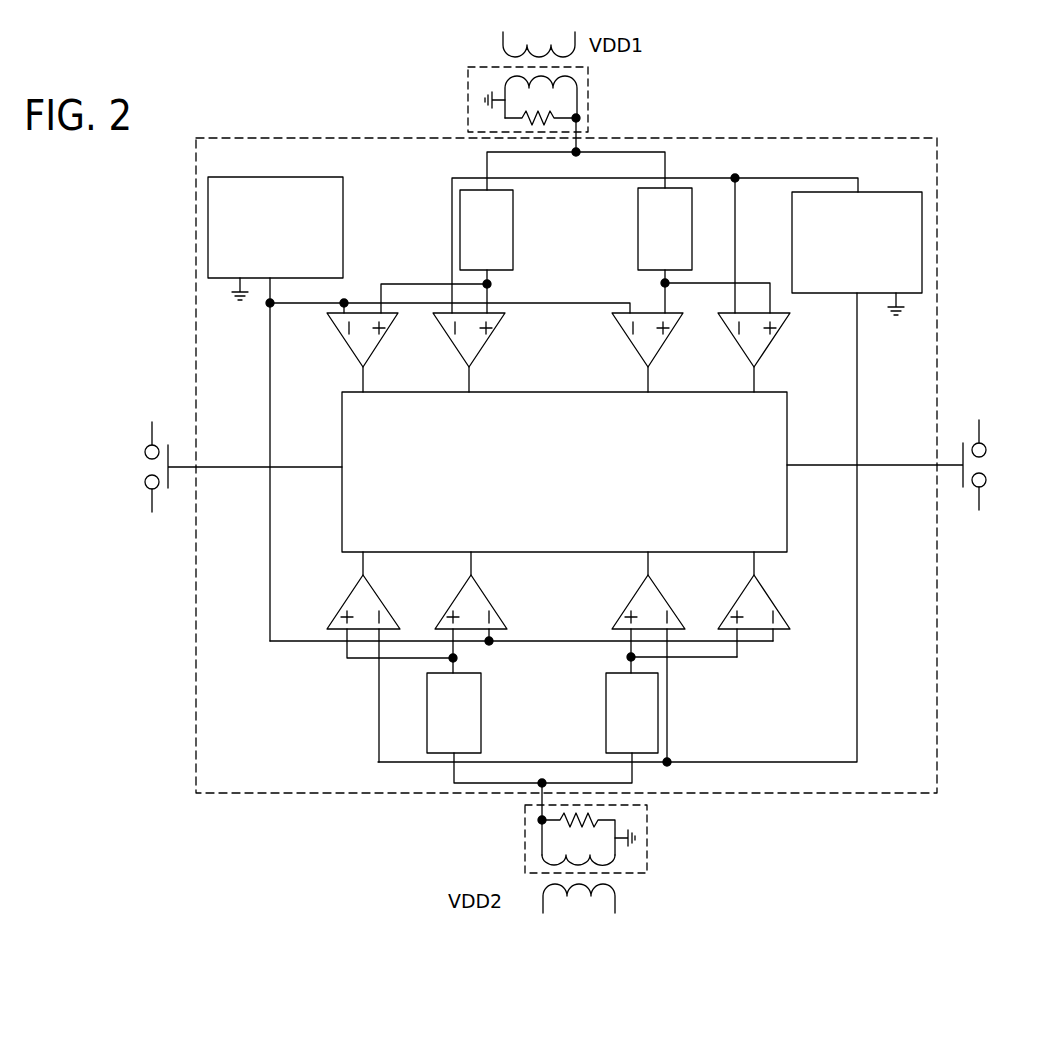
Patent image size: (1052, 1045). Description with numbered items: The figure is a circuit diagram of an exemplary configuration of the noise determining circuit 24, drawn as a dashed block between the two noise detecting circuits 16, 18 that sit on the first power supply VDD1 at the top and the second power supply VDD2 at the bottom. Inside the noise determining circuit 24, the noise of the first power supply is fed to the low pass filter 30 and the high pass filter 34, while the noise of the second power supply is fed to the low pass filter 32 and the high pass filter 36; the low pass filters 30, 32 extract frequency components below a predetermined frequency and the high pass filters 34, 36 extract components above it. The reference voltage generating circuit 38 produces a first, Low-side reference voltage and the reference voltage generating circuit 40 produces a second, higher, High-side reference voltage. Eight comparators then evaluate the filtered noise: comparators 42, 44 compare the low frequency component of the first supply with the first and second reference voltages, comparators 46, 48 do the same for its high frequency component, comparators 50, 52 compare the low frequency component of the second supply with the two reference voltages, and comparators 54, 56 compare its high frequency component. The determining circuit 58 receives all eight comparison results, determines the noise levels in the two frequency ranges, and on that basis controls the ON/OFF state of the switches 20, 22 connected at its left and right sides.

The noise detecting circuit 16 is at (590, 104).
The noise detecting circuit 18 is at (648, 852).
The switch 20 is at (145, 485).
The switch 22 is at (986, 481).
The noise determining circuit 24 is at (938, 712).
The low pass filter 30 is at (514, 232).
The low pass filter 32 is at (605, 725).
The high pass filter 34 is at (637, 242).
The high pass filter 36 is at (482, 704).
The reference voltage generating circuit 38 is at (344, 232).
The reference voltage generating circuit 40 is at (790, 228).
The comparator 42 is at (380, 348).
The comparator 44 is at (487, 348).
The comparator 46 is at (666, 348).
The comparator 48 is at (772, 348).
The comparator 50 is at (773, 596).
The comparator 52 is at (667, 596).
The comparator 54 is at (490, 596).
The comparator 56 is at (382, 596).
The determining circuit 58 is at (788, 438).